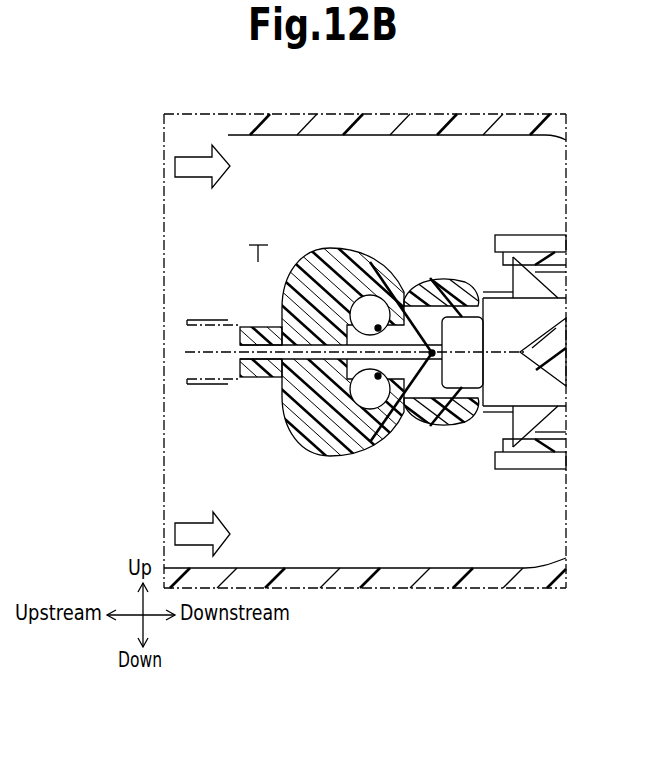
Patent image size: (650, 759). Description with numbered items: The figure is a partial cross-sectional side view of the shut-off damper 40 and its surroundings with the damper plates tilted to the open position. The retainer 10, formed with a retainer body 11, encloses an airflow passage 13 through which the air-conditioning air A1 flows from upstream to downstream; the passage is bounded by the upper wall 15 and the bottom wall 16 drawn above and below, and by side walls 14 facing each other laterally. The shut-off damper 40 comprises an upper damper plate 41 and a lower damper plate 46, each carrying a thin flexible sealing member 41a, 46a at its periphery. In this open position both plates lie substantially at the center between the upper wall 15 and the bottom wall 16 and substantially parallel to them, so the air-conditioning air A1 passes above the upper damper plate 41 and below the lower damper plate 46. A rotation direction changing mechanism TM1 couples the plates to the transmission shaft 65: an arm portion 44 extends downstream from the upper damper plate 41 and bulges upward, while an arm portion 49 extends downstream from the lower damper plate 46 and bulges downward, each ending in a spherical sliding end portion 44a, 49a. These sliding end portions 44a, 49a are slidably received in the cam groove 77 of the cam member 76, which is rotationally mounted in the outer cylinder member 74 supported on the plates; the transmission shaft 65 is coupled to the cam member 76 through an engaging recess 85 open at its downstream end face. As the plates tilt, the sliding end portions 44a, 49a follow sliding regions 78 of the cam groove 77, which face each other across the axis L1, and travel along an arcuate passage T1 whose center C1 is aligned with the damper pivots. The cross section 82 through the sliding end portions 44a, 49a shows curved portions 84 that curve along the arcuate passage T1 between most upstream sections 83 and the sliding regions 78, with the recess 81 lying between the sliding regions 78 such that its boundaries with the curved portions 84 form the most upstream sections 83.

The retainer 10 is at (321, 77).
The retainer body 11 is at (290, 120).
The airflow passage 13 is at (245, 136).
The side wall 14 is at (255, 116).
The upper wall 15 is at (471, 120).
The bottom wall 16 is at (388, 590).
The shut-off damper 40 is at (121, 322).
The upper damper plate 41 is at (240, 328).
The sealing member 41a is at (228, 318).
The lower damper plate 46 is at (242, 360).
The sealing member 46a is at (228, 386).
The arm portion 44 is at (358, 250).
The sliding end portion 44a is at (404, 278).
The arm portion 49 is at (340, 456).
The sliding end portion 49a is at (404, 428).
The cam groove 77 is at (374, 355).
The sliding region 78 is at (383, 268).
The recess 81 is at (427, 367).
The cross section 82 is at (477, 306).
The most upstream section 83 is at (290, 276).
The curved portion 84 is at (318, 265).
The transmission shaft 65 is at (568, 356).
The outer cylinder member 74 is at (530, 240).
The cam member 76 is at (558, 300).
The engaging recess 85 is at (560, 398).
The air-conditioning air A1 is at (190, 162).
The arcuate passage T1 is at (468, 270).
The rotation direction changing mechanism TM1 is at (443, 495).
The center C1 is at (447, 333).
The axis L1 is at (492, 366).